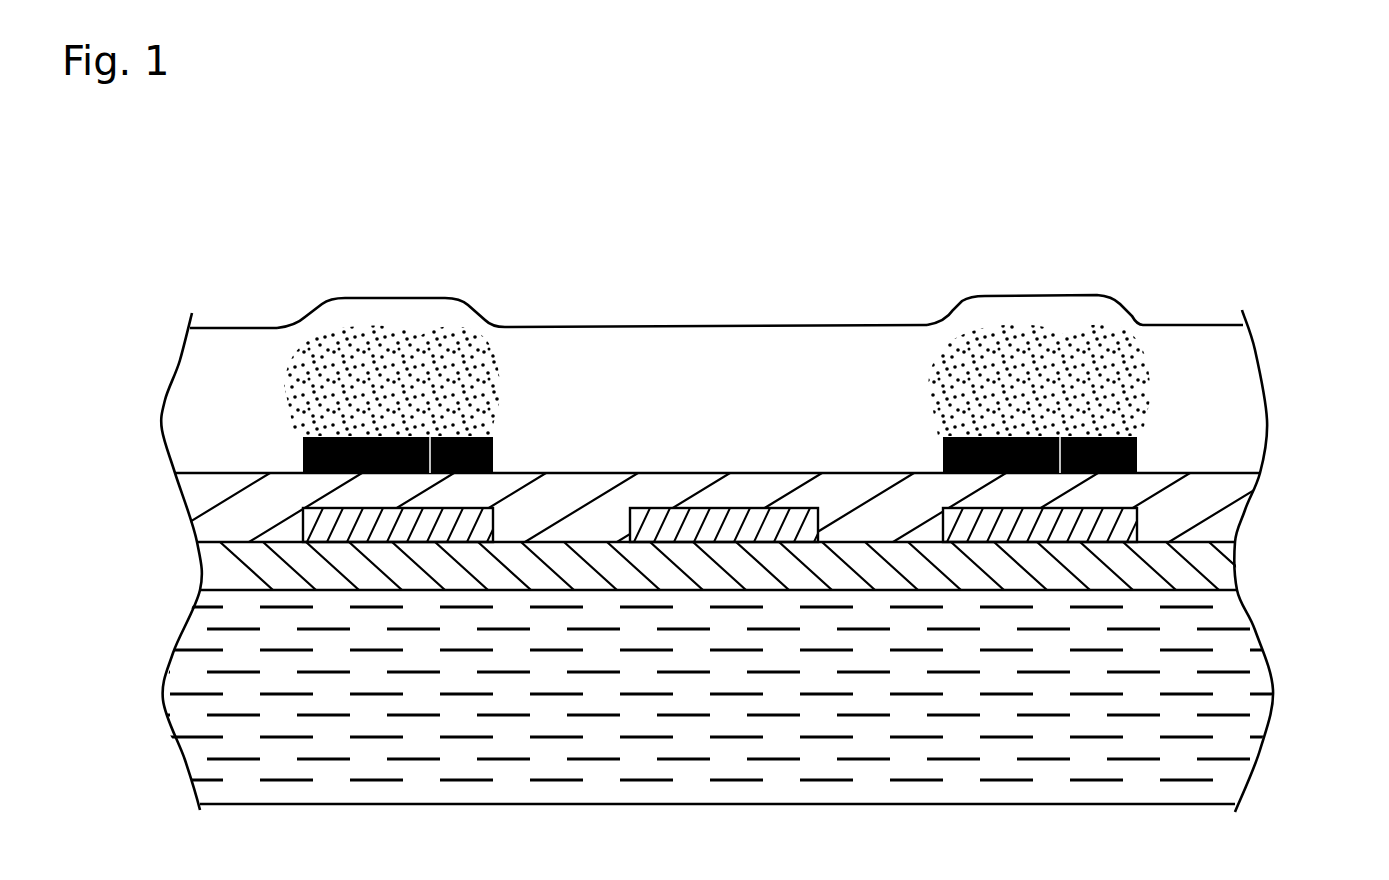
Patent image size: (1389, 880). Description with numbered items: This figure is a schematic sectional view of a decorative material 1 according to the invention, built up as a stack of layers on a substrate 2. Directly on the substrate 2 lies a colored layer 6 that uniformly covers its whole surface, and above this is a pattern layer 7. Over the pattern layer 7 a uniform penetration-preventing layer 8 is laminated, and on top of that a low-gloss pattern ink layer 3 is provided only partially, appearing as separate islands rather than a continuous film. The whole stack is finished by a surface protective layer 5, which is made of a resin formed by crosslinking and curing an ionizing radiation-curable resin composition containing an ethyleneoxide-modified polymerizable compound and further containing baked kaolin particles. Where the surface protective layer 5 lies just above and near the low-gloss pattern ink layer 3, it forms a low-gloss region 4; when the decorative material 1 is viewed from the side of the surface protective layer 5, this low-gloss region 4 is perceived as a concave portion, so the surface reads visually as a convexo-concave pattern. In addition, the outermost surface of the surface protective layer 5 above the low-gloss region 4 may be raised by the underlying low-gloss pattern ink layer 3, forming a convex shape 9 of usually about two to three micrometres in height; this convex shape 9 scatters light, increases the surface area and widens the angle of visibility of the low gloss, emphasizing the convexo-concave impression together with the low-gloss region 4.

The decorative material 1 is at (1202, 248).
The substrate 2 is at (1228, 698).
The low-gloss pattern ink layer 3 is at (303, 453).
The low-gloss region 4 is at (317, 403).
The surface protective layer 5 is at (1218, 397).
The colored layer 6 is at (1228, 572).
The pattern layer 7 is at (1137, 530).
The penetration-preventing layer 8 is at (1210, 490).
The convex shape 9 is at (337, 297).